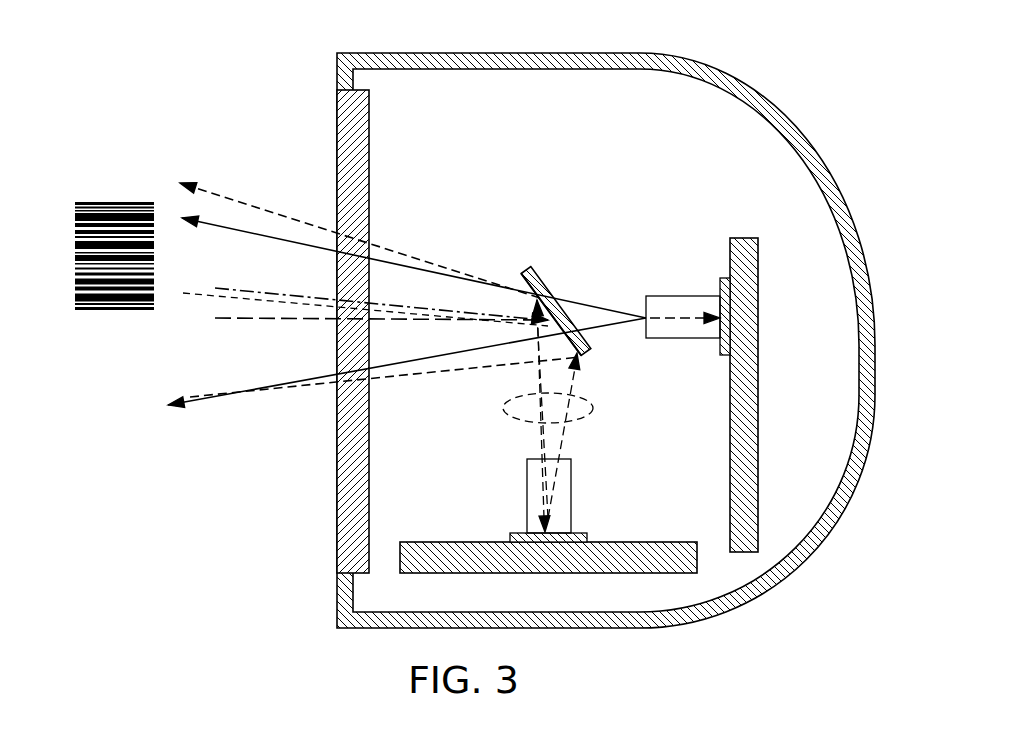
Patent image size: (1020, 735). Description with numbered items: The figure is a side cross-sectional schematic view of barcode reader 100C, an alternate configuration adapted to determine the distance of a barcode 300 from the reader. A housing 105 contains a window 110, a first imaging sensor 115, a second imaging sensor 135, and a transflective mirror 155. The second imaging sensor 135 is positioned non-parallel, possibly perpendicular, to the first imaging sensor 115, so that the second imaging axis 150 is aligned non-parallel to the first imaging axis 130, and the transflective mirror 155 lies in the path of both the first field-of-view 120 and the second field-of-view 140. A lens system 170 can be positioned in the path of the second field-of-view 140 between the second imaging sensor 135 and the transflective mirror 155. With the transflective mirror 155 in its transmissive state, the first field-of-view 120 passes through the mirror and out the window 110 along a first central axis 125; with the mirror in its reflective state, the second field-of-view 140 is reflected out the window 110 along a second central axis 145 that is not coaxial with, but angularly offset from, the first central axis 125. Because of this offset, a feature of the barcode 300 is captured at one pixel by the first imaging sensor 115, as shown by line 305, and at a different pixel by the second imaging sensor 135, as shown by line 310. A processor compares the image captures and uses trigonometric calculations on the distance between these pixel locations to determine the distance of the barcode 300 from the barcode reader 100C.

The barcode reader 100C is at (152, 48).
The housing 105 is at (406, 60).
The window 110 is at (340, 122).
The first imaging sensor 115 is at (713, 272).
The first field-of-view 120 is at (235, 228).
The first central axis 125 is at (242, 318).
The first imaging axis 130 is at (587, 306).
The second imaging sensor 135 is at (512, 518).
The second field-of-view 140 is at (286, 215).
The second central axis 145 is at (222, 288).
The second imaging axis 150 is at (580, 372).
The transflective mirror 155 is at (521, 272).
The lens system 170 is at (594, 408).
The barcode 300 is at (117, 180).
The line 305 is at (675, 313).
The line 310 is at (548, 490).